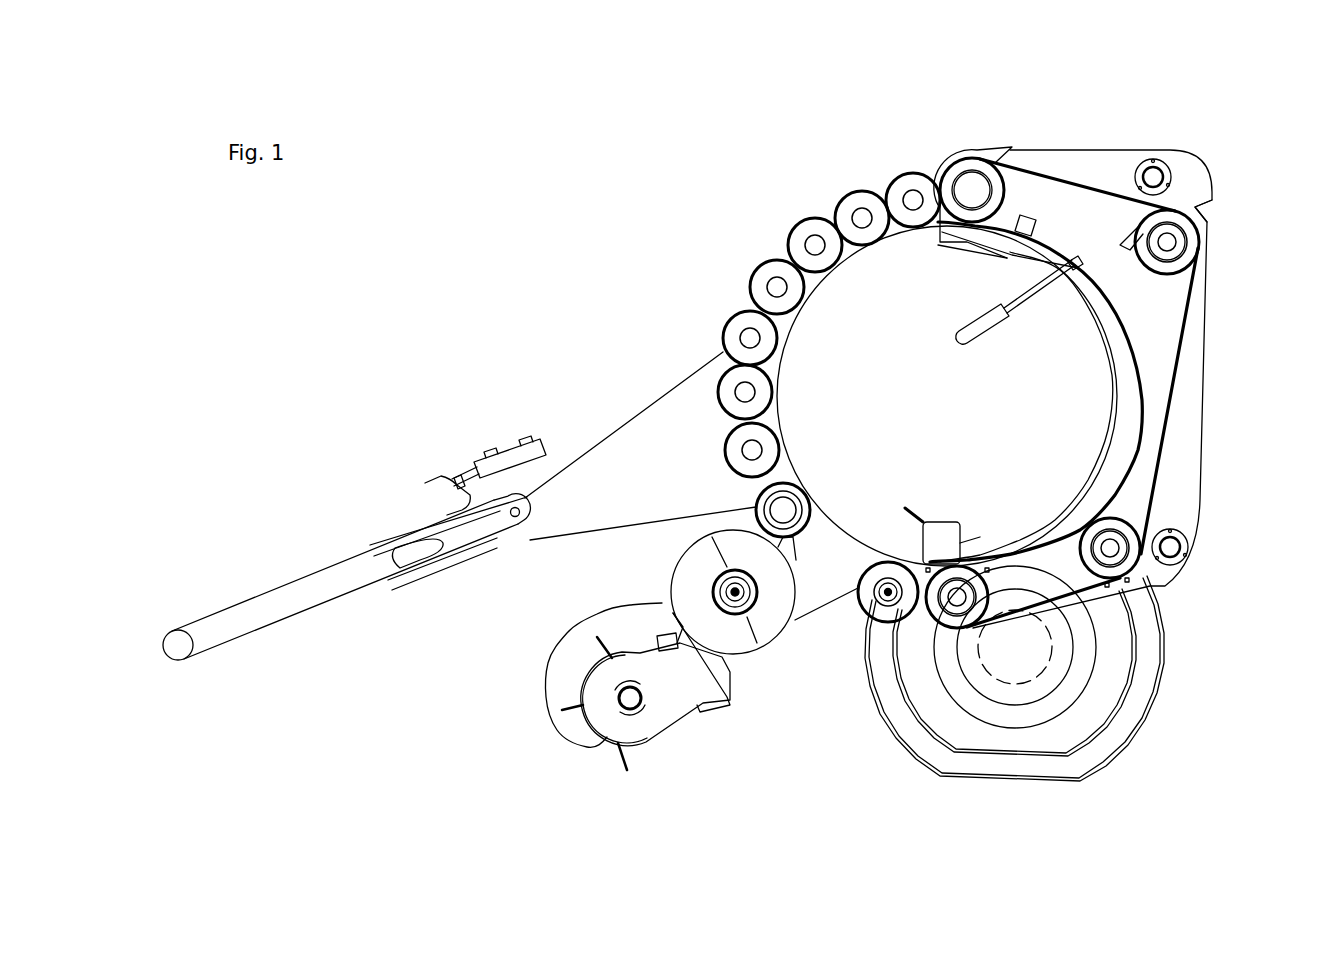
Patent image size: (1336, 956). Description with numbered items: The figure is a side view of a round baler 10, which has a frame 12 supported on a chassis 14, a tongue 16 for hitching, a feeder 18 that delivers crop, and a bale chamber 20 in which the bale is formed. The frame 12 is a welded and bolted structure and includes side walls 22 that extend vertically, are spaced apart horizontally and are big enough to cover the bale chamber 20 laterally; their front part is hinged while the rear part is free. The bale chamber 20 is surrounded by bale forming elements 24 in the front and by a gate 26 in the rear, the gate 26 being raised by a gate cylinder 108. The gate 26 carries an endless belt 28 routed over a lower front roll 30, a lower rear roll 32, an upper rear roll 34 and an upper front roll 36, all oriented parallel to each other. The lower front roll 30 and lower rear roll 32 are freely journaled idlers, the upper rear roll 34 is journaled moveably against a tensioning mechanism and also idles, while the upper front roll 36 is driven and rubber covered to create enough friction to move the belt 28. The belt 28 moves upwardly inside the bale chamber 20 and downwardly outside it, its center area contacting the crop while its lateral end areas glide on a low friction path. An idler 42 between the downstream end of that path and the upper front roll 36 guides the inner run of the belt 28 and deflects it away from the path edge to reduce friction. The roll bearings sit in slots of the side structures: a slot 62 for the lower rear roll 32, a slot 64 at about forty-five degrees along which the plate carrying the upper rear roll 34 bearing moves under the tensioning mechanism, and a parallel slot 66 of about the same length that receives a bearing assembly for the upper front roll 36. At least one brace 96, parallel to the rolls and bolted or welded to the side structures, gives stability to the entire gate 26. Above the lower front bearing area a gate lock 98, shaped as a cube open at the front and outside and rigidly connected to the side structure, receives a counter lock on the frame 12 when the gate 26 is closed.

The round baler 10 is at (536, 276).
The frame 12 is at (920, 633).
The chassis 14 is at (821, 695).
The tongue 16 is at (341, 537).
The feeder 18 is at (597, 755).
The bale chamber 20 is at (937, 341).
The side walls 22 is at (953, 412).
The bale forming elements 24 is at (739, 259).
The gate 26 is at (1112, 452).
The belt 28 is at (1136, 583).
The lower front roll 30 is at (949, 637).
The lower rear roll 32 is at (1118, 528).
The upper rear roll 34 is at (1196, 242).
The upper front roll 36 is at (963, 176).
The idler 42 is at (965, 279).
The slot 62 is at (1150, 582).
The slot 64 is at (1217, 203).
The slot 66 is at (1022, 157).
The brace 96 is at (1153, 160).
The gate lock 98 is at (940, 535).
The gate cylinder 108 is at (983, 325).